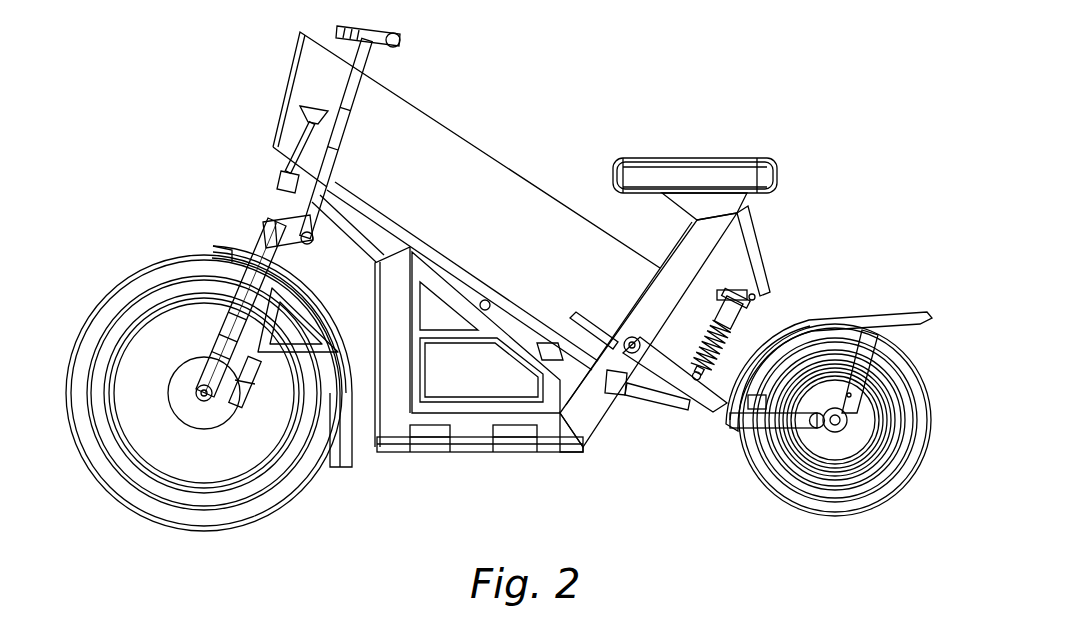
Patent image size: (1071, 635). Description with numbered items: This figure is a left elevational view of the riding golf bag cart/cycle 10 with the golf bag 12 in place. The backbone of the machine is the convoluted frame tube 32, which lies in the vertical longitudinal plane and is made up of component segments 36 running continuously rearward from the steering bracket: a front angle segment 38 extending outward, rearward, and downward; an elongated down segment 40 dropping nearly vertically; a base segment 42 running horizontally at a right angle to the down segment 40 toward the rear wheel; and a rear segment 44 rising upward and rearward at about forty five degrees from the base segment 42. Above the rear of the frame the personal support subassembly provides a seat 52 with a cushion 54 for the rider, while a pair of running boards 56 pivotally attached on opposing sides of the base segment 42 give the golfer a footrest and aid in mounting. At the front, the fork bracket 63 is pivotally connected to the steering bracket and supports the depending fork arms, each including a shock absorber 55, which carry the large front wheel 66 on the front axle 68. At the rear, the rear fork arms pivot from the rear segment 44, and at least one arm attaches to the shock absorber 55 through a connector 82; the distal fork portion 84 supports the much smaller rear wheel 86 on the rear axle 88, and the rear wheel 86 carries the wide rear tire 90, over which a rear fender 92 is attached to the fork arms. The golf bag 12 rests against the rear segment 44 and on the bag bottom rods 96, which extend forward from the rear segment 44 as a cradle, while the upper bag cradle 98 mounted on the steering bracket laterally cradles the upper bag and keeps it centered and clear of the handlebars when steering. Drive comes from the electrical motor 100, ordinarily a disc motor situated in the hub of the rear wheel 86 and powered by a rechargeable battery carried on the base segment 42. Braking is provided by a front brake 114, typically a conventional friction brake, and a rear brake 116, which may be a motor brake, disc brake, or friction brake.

The cart/cycle 10 is at (849, 122).
The golf bag 12 is at (496, 235).
The convoluted frame tube 32 is at (587, 453).
The component segments 36 is at (324, 255).
The front angle segment 38 is at (373, 320).
The elongated down segment 40 is at (406, 363).
The base segment 42 is at (560, 437).
The rear segment 44 is at (676, 306).
The seat 52 is at (783, 174).
The cushion 54 is at (668, 158).
The shock absorber 55 is at (240, 327).
The running boards 56 is at (463, 448).
The fork bracket 63 is at (265, 226).
The front wheel 66 is at (247, 445).
The front axle 68 is at (245, 400).
The connector 82 is at (877, 328).
The distal fork portion 84 is at (745, 432).
The rear wheel 86 is at (822, 472).
The rear axle 88 is at (850, 437).
The rear tire 90 is at (847, 497).
The rear fender 92 is at (355, 468).
The bag bottom rods 96 is at (688, 205).
The upper bag cradle 98 is at (290, 133).
The electrical motor 100 is at (877, 430).
The front brake 114 is at (193, 405).
The rear brake 116 is at (878, 420).